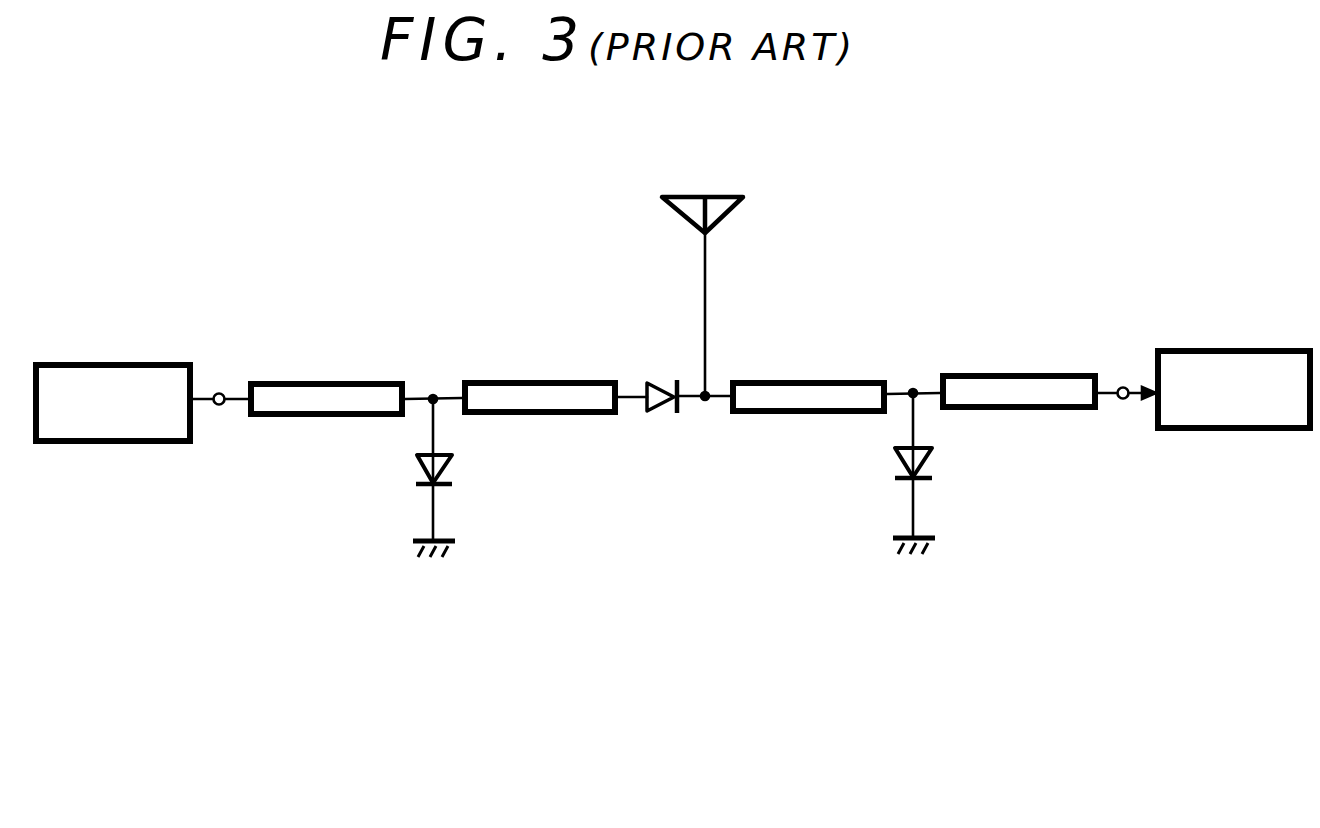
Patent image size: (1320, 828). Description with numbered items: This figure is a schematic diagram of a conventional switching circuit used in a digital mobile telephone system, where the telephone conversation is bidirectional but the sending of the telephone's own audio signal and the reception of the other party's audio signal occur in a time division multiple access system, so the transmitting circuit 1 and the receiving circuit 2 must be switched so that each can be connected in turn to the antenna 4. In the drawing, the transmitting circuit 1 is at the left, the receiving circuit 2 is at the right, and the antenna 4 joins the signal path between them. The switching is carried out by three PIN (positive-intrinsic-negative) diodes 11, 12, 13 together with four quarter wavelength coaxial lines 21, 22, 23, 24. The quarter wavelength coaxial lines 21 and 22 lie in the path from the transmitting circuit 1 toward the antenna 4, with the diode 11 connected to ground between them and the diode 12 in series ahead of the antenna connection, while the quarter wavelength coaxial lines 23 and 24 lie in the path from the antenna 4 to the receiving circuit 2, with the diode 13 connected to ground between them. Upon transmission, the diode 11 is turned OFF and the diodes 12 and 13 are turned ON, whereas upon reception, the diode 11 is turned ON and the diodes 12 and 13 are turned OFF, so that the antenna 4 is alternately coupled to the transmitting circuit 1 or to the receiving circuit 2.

The transmitting circuit 1 is at (108, 443).
The receiving circuit 2 is at (1245, 430).
The antenna 4 is at (705, 279).
The PIN diode 11 is at (450, 462).
The PIN diode 12 is at (656, 412).
The PIN diode 13 is at (930, 458).
The quarter wavelength coaxial line 21 is at (330, 417).
The quarter wavelength coaxial line 22 is at (555, 415).
The quarter wavelength coaxial line 23 is at (787, 414).
The quarter wavelength coaxial line 24 is at (1020, 410).